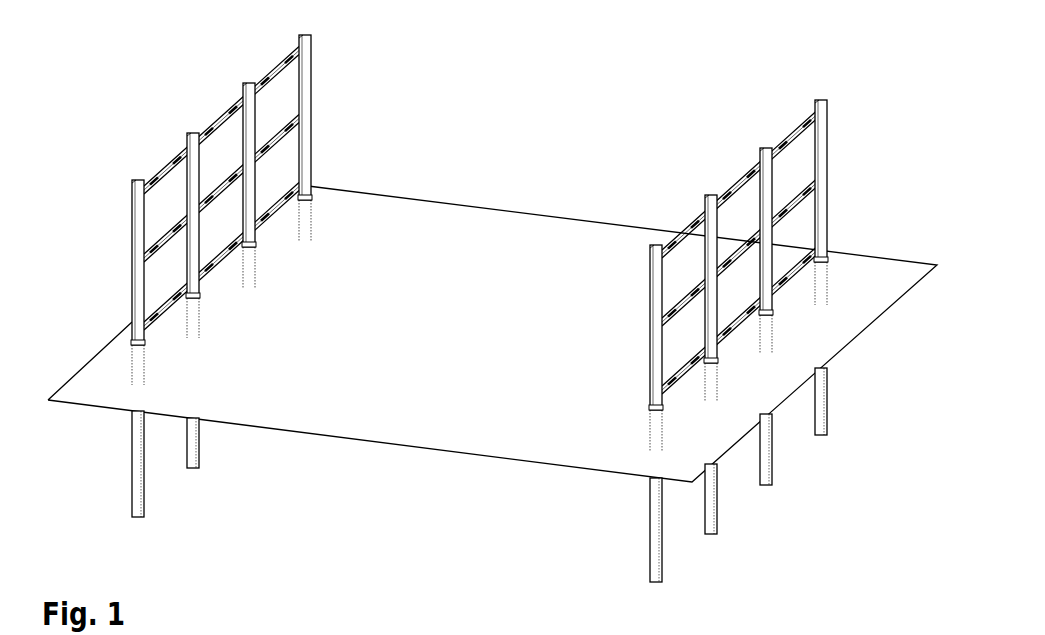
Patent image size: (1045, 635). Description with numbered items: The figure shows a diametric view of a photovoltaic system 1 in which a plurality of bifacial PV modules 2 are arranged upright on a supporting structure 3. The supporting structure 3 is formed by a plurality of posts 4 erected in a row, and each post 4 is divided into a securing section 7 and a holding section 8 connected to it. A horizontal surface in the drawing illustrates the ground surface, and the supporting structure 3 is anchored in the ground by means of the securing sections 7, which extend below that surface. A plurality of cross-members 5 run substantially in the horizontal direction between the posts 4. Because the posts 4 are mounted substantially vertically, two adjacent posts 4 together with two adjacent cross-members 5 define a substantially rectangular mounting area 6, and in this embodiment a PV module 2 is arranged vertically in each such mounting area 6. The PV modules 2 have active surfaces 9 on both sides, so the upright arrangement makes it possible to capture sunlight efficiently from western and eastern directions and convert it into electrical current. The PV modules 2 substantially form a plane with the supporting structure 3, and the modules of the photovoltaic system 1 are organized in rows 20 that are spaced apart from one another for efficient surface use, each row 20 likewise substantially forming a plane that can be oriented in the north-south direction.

The photovoltaic system 1 is at (492, 296).
The bifacial PV module 2 is at (280, 182).
The supporting structure 3 is at (188, 135).
The post 4 is at (312, 98).
The cross-member 5 is at (223, 113).
The rectangular mounting area 6 is at (162, 279).
The securing section 7 is at (137, 493).
The holding section 8 is at (138, 318).
The active surface 9 is at (793, 187).
The row 20 is at (783, 137).